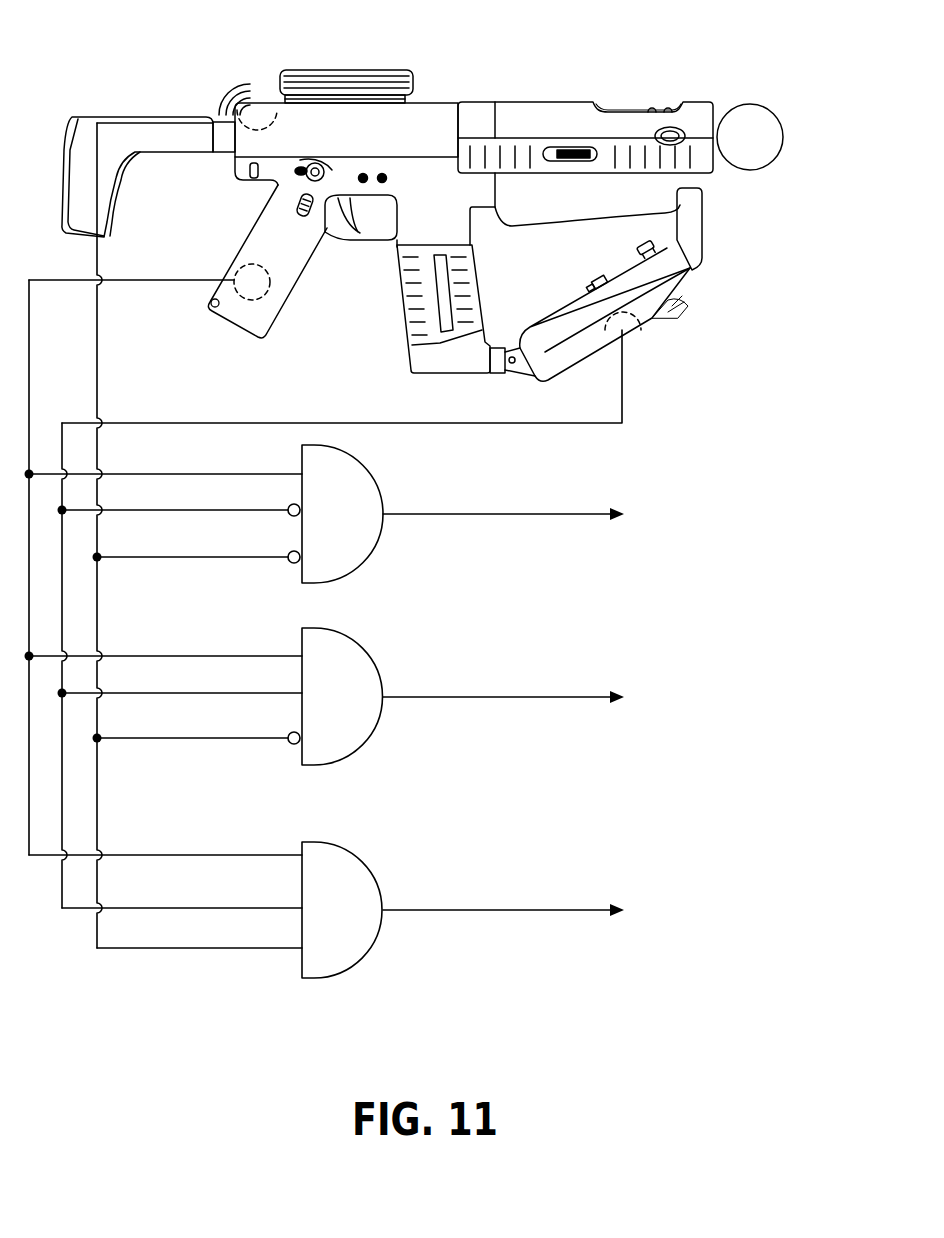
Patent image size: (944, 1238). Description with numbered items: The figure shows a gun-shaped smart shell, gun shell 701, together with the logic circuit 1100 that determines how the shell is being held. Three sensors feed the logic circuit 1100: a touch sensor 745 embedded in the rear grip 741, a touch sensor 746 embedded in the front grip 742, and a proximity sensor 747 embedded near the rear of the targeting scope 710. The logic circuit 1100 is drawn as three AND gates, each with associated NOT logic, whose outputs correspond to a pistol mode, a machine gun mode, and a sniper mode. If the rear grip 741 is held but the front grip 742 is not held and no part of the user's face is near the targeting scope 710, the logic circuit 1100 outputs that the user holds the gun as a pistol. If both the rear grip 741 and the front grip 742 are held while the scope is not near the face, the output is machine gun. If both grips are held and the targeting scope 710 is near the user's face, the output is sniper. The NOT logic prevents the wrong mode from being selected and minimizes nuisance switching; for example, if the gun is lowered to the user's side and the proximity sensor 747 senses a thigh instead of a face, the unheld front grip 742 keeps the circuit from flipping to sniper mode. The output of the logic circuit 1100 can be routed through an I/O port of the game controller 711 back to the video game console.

The gun shell 701 is at (447, 374).
The targeting scope 710 is at (392, 69).
The game controller 711 is at (632, 108).
The rear grip 741 is at (221, 318).
The front grip 742 is at (702, 268).
The touch sensor 745 is at (272, 282).
The touch sensor 746 is at (643, 323).
The proximity sensor 747 is at (263, 105).
The logic circuit 1100 is at (633, 466).